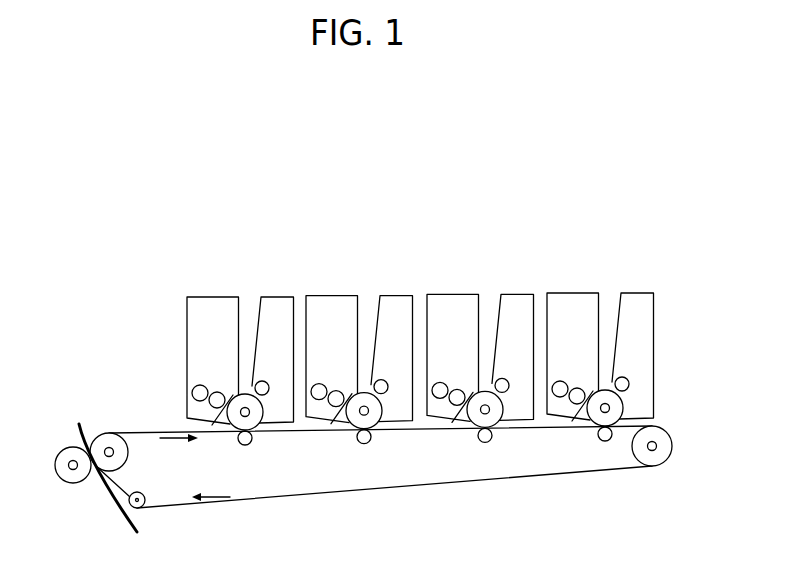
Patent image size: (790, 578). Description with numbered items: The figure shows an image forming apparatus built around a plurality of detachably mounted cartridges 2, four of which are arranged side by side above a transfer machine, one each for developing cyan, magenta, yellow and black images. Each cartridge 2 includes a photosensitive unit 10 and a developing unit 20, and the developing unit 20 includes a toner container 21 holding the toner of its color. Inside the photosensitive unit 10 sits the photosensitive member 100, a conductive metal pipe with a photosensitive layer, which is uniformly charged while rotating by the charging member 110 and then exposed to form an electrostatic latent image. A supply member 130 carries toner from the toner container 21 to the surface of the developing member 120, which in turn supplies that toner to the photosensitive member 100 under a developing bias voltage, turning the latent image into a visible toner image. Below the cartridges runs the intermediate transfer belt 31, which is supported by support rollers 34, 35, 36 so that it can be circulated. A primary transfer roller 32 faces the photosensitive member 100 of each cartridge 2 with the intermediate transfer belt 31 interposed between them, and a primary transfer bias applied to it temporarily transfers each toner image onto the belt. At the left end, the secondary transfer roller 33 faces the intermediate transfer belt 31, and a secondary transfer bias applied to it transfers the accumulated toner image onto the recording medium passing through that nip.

The cartridge 2 is at (206, 335).
The photosensitive unit 10 is at (275, 297).
The developing unit 20 is at (183, 332).
The toner container 21 is at (215, 300).
The intermediate transfer belt 31 is at (147, 431).
The primary transfer roller 32 is at (614, 444).
The secondary transfer roller 33 is at (65, 483).
The support roller 34 is at (658, 465).
The support roller 35 is at (128, 455).
The support roller 36 is at (144, 502).
The photosensitive member 100 is at (616, 403).
The charging member 110 is at (627, 379).
The developing member 120 is at (581, 388).
The supply member 130 is at (561, 381).